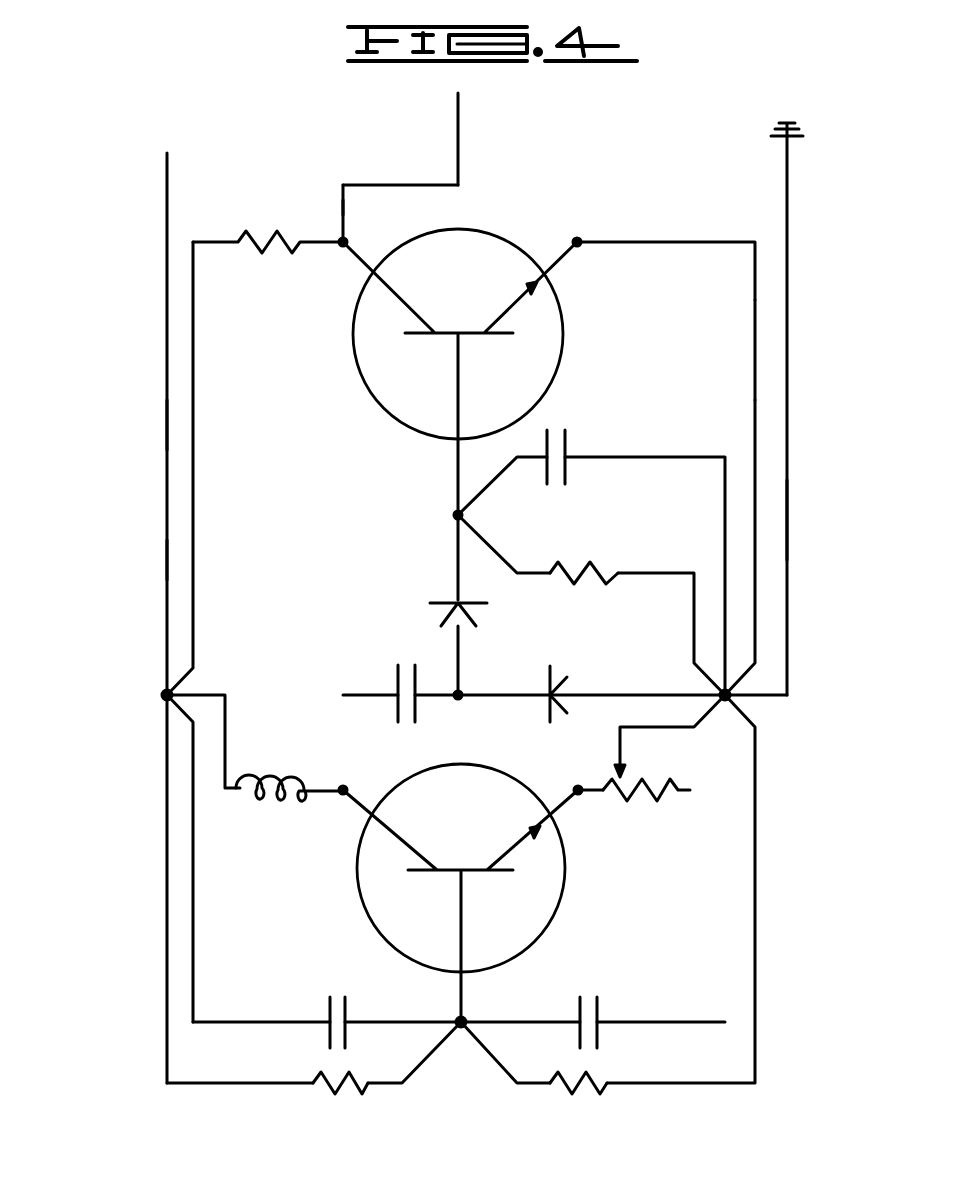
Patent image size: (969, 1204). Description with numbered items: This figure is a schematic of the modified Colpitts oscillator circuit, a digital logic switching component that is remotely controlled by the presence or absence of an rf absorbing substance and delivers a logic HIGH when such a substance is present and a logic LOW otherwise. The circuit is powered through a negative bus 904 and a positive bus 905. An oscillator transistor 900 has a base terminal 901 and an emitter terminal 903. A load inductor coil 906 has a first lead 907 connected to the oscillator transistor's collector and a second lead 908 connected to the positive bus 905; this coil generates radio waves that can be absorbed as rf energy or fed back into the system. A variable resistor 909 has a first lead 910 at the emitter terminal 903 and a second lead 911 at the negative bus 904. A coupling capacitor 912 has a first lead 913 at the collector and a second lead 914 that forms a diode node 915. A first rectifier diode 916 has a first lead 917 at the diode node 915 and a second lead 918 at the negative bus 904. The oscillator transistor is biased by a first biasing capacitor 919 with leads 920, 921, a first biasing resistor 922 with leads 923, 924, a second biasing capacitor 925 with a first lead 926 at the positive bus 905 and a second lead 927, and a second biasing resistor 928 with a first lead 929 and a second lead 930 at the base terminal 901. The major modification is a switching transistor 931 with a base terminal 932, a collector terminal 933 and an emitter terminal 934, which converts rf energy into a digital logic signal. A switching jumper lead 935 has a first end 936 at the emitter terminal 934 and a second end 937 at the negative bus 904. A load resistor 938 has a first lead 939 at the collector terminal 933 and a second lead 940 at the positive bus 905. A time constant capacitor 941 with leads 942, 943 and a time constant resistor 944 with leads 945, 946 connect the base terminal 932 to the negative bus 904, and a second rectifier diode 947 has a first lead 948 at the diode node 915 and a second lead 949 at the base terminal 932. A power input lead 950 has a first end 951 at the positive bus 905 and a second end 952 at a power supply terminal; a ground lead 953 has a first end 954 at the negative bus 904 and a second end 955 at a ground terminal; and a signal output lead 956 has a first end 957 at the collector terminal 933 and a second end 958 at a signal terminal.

The oscillator transistor 900 is at (478, 820).
The base terminal 901 is at (455, 1035).
The emitter terminal 903 is at (578, 796).
The negative bus 904 is at (740, 705).
The positive bus 905 is at (160, 692).
The load inductor coil 906 is at (262, 772).
The first lead 907 is at (213, 694).
The second lead 908 is at (345, 800).
The variable resistor 909 is at (630, 772).
The first lead 910 is at (552, 798).
The second lead 911 is at (618, 746).
The coupling capacitor 912 is at (395, 680).
The first lead 913 is at (358, 710).
The second lead 914 is at (445, 700).
The diode node 915 is at (455, 690).
The first rectifier diode 916 is at (553, 664).
The first lead 917 is at (484, 694).
The second lead 918 is at (628, 694).
The first biasing capacitor 919 is at (568, 992).
The first lead 920 is at (665, 1018).
The second lead 921 is at (489, 1018).
The first biasing resistor 922 is at (580, 1098).
The first lead 923 is at (730, 1086).
The second lead 924 is at (510, 1088).
The second biasing capacitor 925 is at (350, 990).
The first lead 926 is at (277, 1018).
The conductor 927 is at (428, 1018).
The second biasing resistor 928 is at (325, 1096).
The first lead 929 is at (188, 1088).
The second lead 930 is at (398, 1088).
The switching transistor 931 is at (474, 286).
The base terminal 932 is at (455, 515).
The collector terminal 933 is at (335, 248).
The emitter terminal 934 is at (580, 248).
The switching jumper lead 935 is at (752, 378).
The first end 936 is at (730, 246).
The second end 937 is at (752, 433).
The load resistor 938 is at (242, 250).
The first lead 939 is at (342, 240).
The second lead 940 is at (192, 242).
The time constant capacitor 941 is at (567, 455).
The first lead 942 is at (535, 458).
The second lead 943 is at (682, 456).
The time constant resistor 944 is at (578, 564).
The first lead 945 is at (470, 530).
The second lead 946 is at (650, 572).
The second rectifier diode 947 is at (445, 600).
The first lead 948 is at (462, 635).
The second lead 949 is at (455, 575).
The power input lead 950 is at (140, 470).
The first end 951 is at (163, 563).
The conductor 952 is at (165, 180).
The ground lead 953 is at (797, 527).
The first end 954 is at (782, 700).
The second end 955 is at (785, 180).
The signal output lead 956 is at (412, 183).
The first end 957 is at (344, 205).
The second end 958 is at (460, 130).